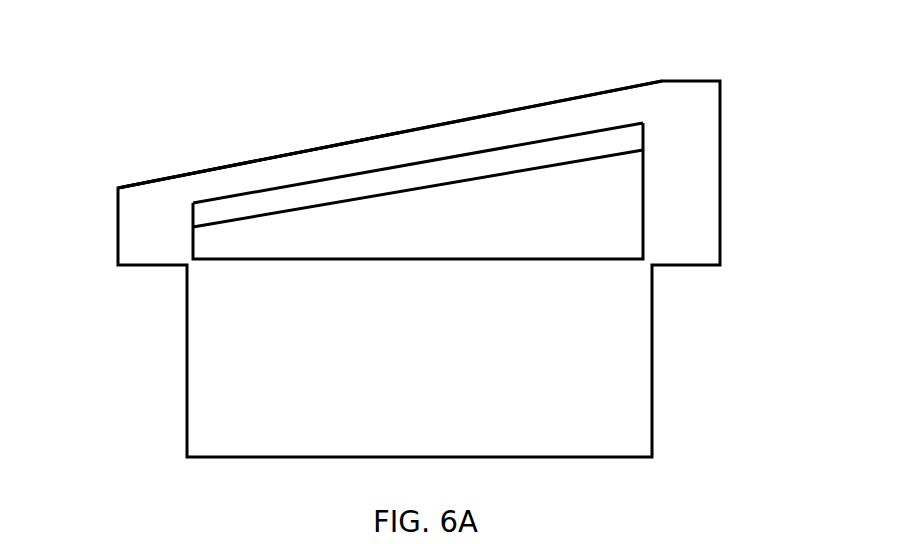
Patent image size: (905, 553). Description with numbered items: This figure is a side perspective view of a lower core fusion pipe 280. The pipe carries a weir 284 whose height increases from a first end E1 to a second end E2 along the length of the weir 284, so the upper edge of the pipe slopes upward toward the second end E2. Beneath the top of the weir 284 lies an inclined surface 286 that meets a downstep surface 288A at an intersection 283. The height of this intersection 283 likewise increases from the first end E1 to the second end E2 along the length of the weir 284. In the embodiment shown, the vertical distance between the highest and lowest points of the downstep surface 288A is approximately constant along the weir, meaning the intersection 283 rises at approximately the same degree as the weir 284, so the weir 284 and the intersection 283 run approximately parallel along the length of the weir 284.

The lower core fusion pipe 280 is at (546, 362).
The intersection 283 is at (458, 156).
The weir 284 is at (398, 131).
The inclined surface 286 is at (558, 148).
The downstep surface 288A is at (305, 165).
The first end E1 is at (105, 160).
The second end E2 is at (735, 60).